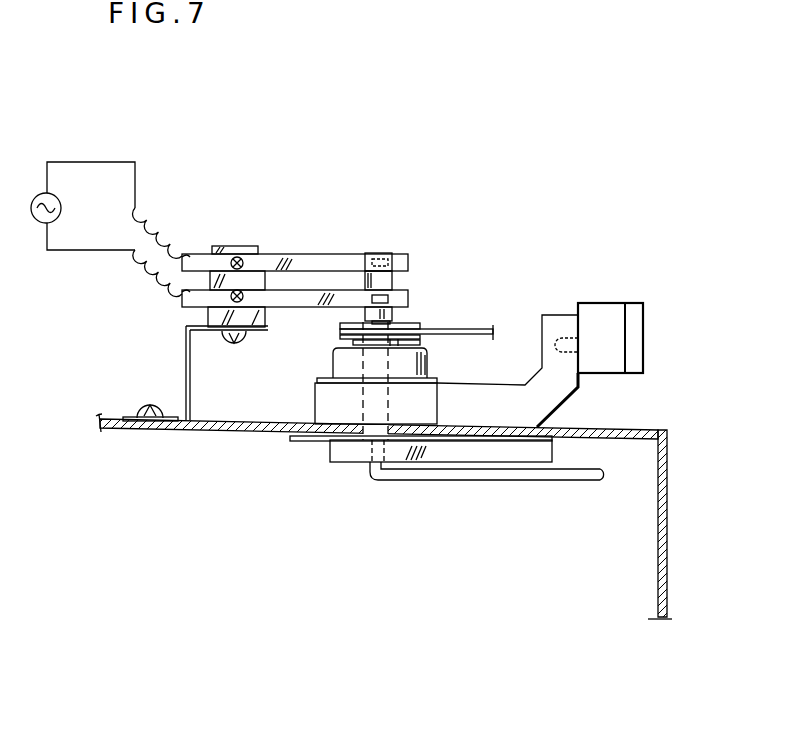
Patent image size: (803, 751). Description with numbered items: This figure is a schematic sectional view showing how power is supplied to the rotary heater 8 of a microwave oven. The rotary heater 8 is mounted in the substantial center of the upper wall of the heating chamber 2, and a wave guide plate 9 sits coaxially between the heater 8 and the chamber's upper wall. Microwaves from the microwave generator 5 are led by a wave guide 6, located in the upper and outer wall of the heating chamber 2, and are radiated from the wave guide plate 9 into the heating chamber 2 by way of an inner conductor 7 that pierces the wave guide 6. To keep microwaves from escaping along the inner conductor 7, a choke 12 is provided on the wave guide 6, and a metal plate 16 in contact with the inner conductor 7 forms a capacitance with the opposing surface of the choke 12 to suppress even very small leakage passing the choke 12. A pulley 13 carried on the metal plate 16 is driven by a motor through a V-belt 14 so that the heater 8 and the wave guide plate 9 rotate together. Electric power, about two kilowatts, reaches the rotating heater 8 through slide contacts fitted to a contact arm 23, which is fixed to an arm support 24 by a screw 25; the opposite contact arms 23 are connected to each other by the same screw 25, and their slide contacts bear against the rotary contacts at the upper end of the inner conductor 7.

The heating chamber 2 is at (125, 535).
The microwave generator 5 is at (607, 312).
The wave guide 6 is at (318, 400).
The inner conductor 7 is at (328, 440).
The rotary heater 8 is at (368, 470).
The wave guide plate 9 is at (363, 402).
The choke 12 is at (333, 363).
The pulley 13 is at (415, 326).
The V-belt 14 is at (467, 329).
The metal plate 16 is at (335, 341).
The contact arm 23 is at (310, 289).
The arm support 24 is at (215, 247).
The screw 25 is at (243, 259).